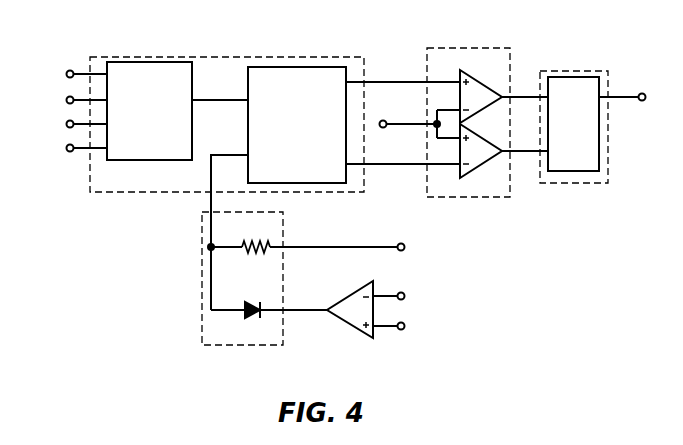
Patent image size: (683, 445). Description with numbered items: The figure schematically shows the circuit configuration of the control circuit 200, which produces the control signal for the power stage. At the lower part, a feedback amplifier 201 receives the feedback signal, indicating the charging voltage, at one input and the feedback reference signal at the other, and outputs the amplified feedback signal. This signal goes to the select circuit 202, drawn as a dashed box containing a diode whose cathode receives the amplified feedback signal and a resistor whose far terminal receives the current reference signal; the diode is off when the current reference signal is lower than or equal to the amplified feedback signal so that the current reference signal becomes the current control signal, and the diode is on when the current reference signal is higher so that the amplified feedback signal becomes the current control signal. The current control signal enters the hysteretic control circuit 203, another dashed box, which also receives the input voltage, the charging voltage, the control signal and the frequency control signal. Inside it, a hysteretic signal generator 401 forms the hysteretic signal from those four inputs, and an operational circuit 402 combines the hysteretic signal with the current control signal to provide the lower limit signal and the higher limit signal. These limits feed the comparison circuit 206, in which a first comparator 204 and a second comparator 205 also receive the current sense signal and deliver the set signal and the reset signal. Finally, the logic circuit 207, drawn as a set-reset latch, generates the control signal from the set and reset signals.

The control circuit 200 is at (65, 43).
The feedback amplifier 201 is at (353, 327).
The select circuit 202 is at (200, 287).
The hysteretic control circuit 203 is at (263, 57).
The first comparator 204 is at (498, 68).
The second comparator 205 is at (482, 169).
The comparison circuit 206 is at (463, 48).
The logic circuit 207 is at (555, 71).
The hysteretic signal generator 401 is at (138, 162).
The operational circuit 402 is at (248, 137).